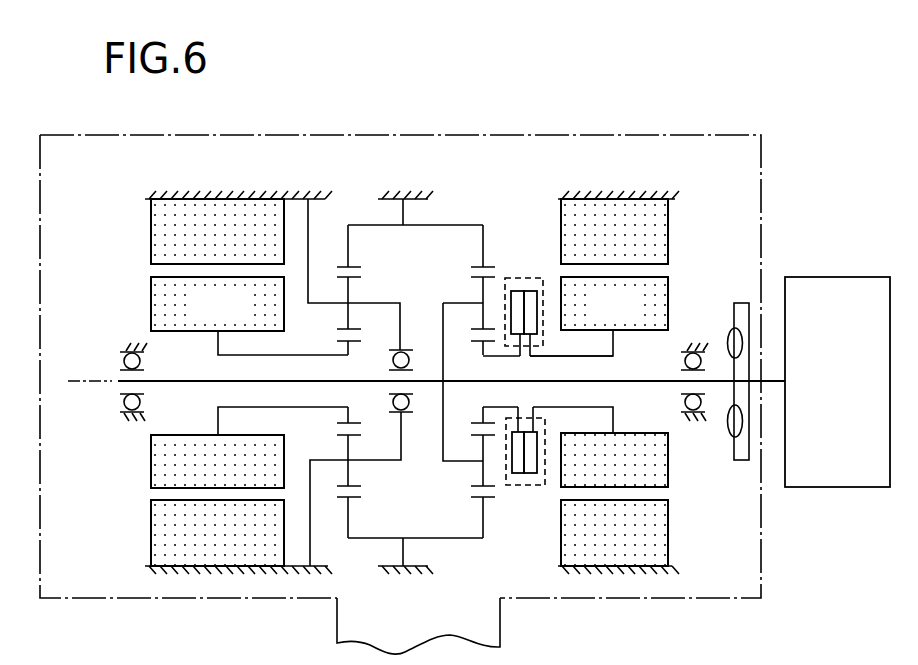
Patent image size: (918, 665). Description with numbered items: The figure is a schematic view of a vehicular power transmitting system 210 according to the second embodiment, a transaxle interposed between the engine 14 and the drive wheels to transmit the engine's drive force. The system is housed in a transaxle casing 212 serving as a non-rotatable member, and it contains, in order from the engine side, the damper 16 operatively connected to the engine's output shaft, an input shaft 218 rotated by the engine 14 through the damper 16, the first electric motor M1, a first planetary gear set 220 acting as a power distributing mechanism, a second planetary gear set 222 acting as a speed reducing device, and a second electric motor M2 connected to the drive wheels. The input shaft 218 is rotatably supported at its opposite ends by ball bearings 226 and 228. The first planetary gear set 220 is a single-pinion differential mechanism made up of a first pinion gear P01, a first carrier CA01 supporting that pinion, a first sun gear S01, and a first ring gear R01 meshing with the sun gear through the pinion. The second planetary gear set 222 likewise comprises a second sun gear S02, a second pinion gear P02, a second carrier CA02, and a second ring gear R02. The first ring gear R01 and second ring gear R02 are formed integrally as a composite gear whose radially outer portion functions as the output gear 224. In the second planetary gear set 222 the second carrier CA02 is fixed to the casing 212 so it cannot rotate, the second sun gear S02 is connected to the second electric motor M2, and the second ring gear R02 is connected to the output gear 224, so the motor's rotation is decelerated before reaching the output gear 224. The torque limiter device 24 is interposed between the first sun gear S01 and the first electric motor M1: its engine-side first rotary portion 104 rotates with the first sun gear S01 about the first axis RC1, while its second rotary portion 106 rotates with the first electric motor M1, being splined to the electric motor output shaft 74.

The vehicular power transmitting system 210 is at (715, 56).
The transaxle casing 212 is at (225, 198).
The first planetary gear set 220 is at (450, 343).
The second planetary gear set 222 is at (350, 357).
The output gear 224 is at (396, 198).
The first ring gear R01 is at (478, 266).
The first pinion gear P01 is at (472, 285).
The first sun gear S01 is at (473, 342).
The first carrier CA01 is at (445, 300).
The second ring gear R02 is at (356, 266).
The second pinion gear P02 is at (342, 329).
The second sun gear S02 is at (361, 342).
The second carrier CA02 is at (362, 303).
The torque limiter device 24 is at (522, 339).
The first rotary portion 104 is at (517, 300).
The second rotary portion 106 is at (527, 300).
The electric motor output shaft 74 is at (543, 357).
The engine 14 is at (817, 293).
The damper 16 is at (740, 303).
The input shaft 218 is at (648, 384).
The ball bearing 226 is at (700, 416).
The ball bearing 228 is at (130, 416).
The first axis RC1 is at (73, 381).
The first electric motor M1 is at (599, 382).
The second electric motor M2 is at (249, 382).